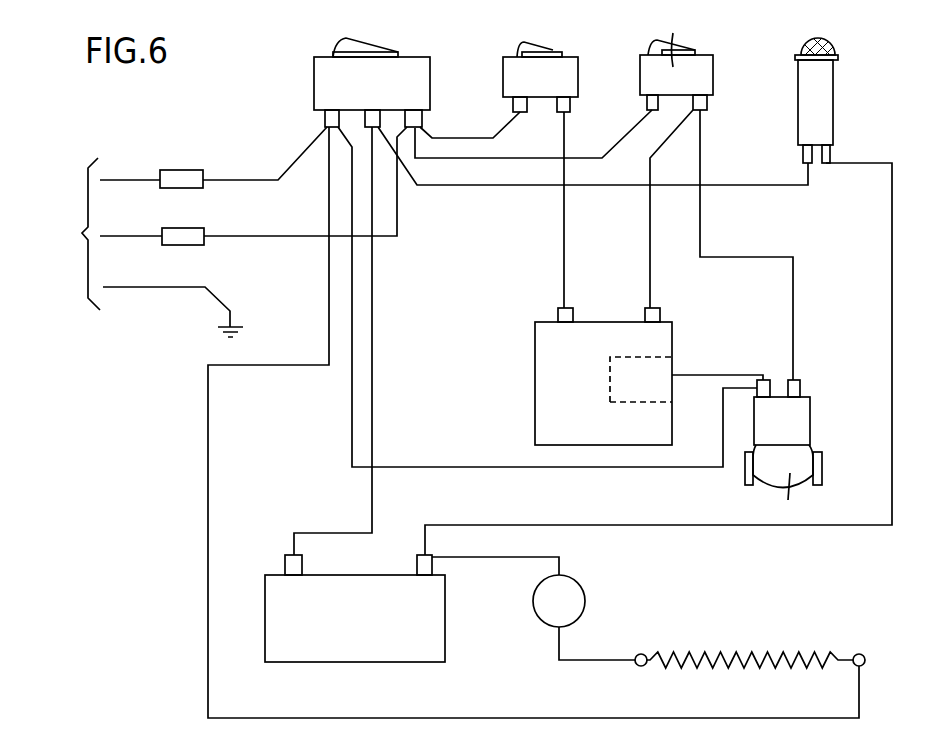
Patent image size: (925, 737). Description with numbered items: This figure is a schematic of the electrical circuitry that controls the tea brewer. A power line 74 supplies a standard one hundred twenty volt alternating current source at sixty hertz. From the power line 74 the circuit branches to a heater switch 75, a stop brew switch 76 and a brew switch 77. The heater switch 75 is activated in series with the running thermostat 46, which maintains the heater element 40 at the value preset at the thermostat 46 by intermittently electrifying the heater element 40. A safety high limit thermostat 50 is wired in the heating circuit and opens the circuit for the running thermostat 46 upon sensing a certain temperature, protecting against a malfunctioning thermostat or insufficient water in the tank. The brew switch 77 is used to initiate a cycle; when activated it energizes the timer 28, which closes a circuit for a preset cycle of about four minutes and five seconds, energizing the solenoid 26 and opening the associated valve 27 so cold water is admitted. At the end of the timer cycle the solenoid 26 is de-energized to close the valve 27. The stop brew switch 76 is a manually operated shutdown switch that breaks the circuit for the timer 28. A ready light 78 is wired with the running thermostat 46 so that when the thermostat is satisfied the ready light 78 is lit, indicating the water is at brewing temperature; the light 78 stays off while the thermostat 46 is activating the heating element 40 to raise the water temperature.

The power line 74 is at (130, 174).
The heater switch 75 is at (313, 78).
The stop brew switch 76 is at (505, 62).
The brew switch 77 is at (640, 65).
The ready light 78 is at (802, 44).
The timer 28 is at (547, 367).
The solenoid 26 is at (802, 415).
The valve 27 is at (760, 480).
The running thermostat 46 is at (440, 630).
The safety high limit thermostat 50 is at (565, 583).
The heating element 40 is at (767, 652).